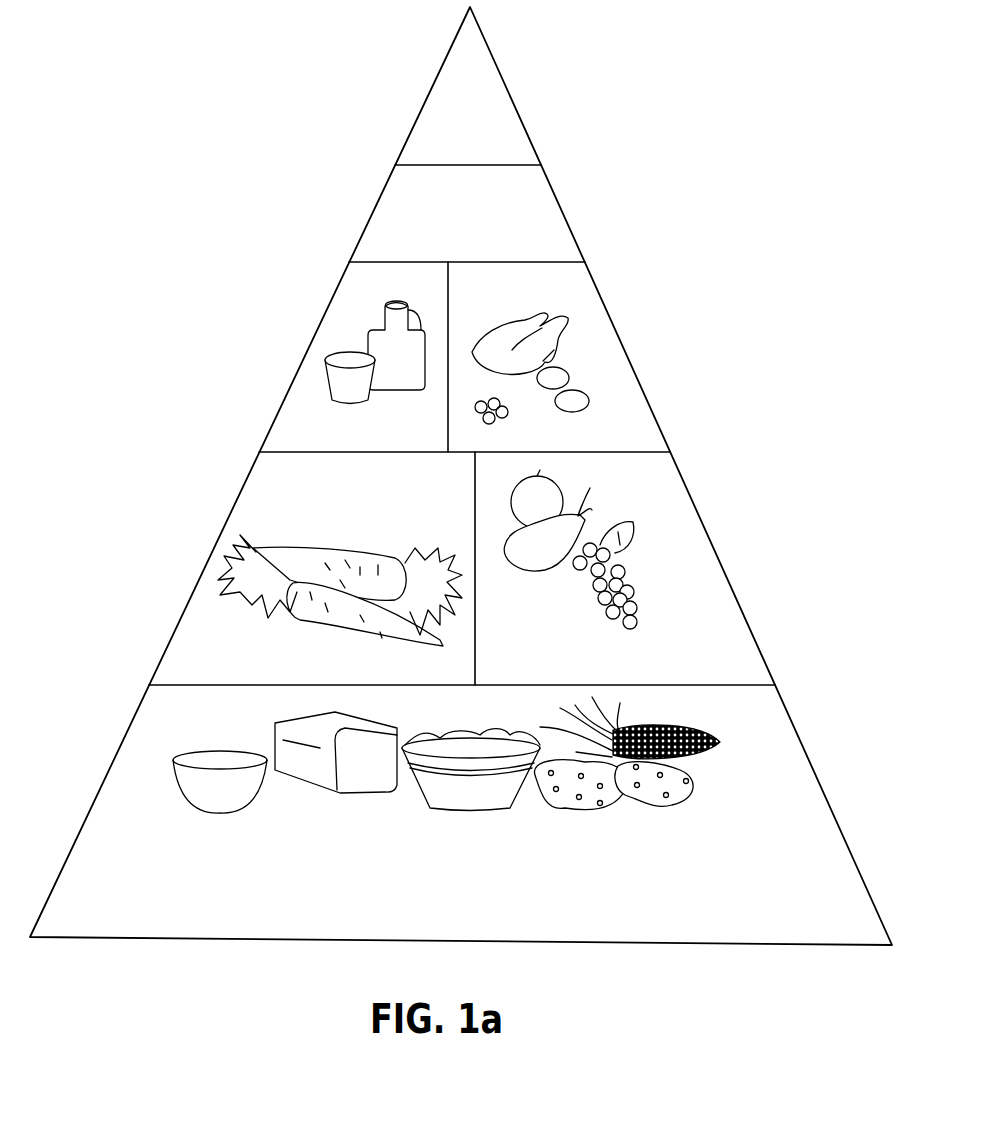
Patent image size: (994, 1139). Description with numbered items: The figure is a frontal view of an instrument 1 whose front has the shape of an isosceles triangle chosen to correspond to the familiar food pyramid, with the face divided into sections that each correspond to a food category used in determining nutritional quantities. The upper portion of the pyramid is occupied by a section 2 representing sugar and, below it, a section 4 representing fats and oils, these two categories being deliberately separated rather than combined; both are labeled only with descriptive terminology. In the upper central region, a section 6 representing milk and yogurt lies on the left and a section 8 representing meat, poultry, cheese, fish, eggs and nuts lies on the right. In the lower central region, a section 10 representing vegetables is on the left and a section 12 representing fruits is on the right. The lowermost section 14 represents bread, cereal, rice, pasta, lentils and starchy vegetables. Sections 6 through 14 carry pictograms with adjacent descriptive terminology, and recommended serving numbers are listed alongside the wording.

The instrument 1 is at (113, 728).
The section representing sugar 2 is at (492, 94).
The section representing fats and oils 4 is at (542, 211).
The section representing milk and yogurt 6 is at (347, 311).
The section representing meat, poultry, cheese, fish, eggs and nuts 8 is at (640, 428).
The section representing vegetables 10 is at (260, 488).
The section representing fruits 12 is at (702, 573).
The section representing bread, cereal, rice, pasta, lentils and starchy vegetables 14 is at (800, 777).